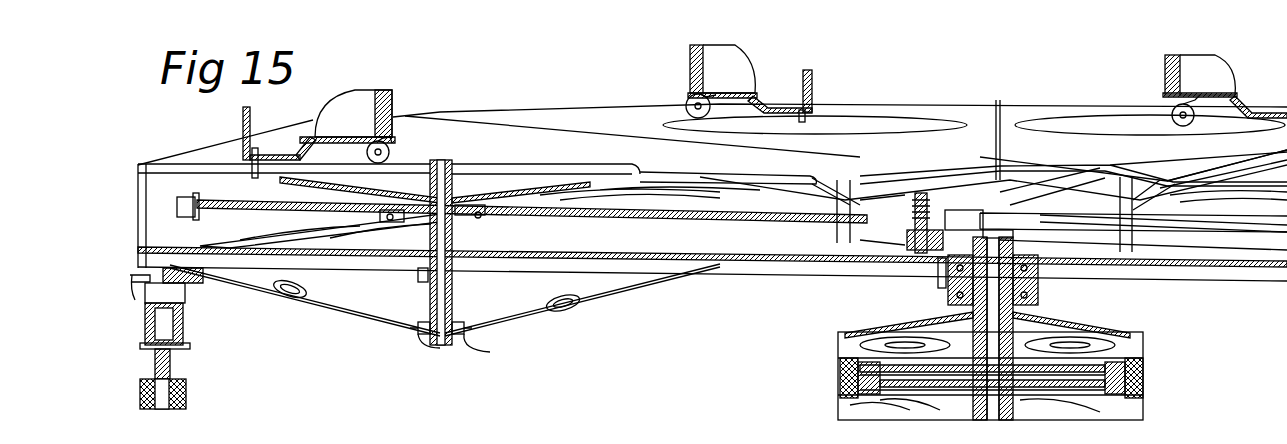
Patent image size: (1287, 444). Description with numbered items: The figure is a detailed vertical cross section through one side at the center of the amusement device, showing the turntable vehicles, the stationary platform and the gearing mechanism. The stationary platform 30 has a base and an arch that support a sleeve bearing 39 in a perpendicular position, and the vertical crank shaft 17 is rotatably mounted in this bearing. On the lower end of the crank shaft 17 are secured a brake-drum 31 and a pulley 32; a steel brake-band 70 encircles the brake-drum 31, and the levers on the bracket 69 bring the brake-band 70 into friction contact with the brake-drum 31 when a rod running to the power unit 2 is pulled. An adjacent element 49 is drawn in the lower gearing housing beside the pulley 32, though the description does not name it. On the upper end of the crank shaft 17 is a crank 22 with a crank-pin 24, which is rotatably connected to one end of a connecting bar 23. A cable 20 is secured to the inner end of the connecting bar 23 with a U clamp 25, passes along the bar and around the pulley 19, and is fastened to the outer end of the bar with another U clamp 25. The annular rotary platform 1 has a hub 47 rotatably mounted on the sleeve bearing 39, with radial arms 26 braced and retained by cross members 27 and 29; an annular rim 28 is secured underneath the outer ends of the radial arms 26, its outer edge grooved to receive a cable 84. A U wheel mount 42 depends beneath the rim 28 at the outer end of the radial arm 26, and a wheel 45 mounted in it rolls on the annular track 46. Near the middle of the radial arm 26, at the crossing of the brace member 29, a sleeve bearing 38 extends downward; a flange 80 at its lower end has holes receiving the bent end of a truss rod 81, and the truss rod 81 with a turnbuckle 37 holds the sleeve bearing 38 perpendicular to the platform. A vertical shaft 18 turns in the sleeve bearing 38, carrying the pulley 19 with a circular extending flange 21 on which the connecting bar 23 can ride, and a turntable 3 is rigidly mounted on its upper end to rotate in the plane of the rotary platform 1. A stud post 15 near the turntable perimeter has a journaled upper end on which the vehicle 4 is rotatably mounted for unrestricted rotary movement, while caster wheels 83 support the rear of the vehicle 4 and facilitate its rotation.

The rotary platform 1 is at (573, 98).
The power unit 2 is at (1165, 182).
The turntable 3 is at (402, 160).
The vehicle 4 is at (355, 100).
The stud post 15 is at (238, 158).
The crank shaft 17 is at (1010, 330).
The vertical shaft 18 is at (448, 165).
The pulley 19 is at (470, 222).
The cable 20 is at (176, 197).
The circular extending flange 21 is at (390, 222).
The crank 22 is at (925, 255).
The connecting bar 23 is at (200, 215).
The crank-pin 24 is at (905, 250).
The U clamp 25 is at (191, 197).
The radial arm 26 is at (770, 262).
The cross member 27 is at (185, 296).
The annular rim 28 is at (192, 280).
The cross member 29 is at (418, 276).
The stationary platform 30 is at (1138, 383).
The brake-drum 31 is at (880, 365).
The pulley 32 is at (845, 405).
The turnbuckle 37 is at (285, 298).
The sleeve bearing 38 is at (452, 315).
The sleeve bearing 39 is at (1038, 305).
The U wheel mount 42 is at (183, 322).
The wheel 45 is at (170, 362).
The annular track 46 is at (188, 388).
The hub 47 is at (948, 288).
The shaft 49 is at (840, 382).
The bracket 69 is at (900, 318).
The brake-band 70 is at (860, 366).
The flange 80 is at (462, 348).
The truss rod 81 is at (350, 313).
The caster wheels 83 is at (385, 142).
The cable 84 is at (136, 303).